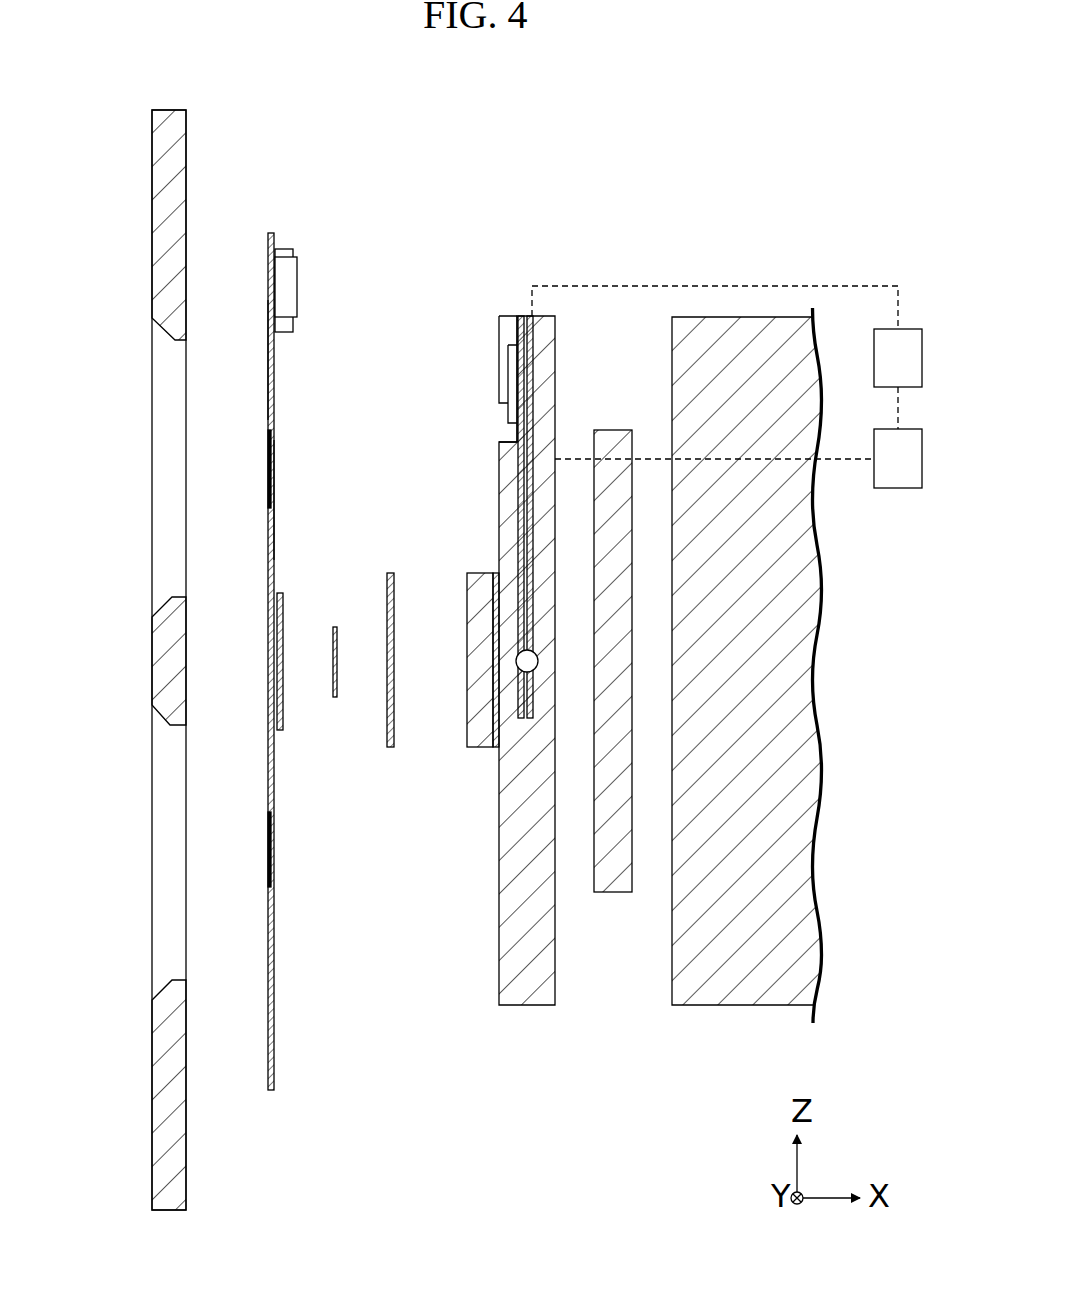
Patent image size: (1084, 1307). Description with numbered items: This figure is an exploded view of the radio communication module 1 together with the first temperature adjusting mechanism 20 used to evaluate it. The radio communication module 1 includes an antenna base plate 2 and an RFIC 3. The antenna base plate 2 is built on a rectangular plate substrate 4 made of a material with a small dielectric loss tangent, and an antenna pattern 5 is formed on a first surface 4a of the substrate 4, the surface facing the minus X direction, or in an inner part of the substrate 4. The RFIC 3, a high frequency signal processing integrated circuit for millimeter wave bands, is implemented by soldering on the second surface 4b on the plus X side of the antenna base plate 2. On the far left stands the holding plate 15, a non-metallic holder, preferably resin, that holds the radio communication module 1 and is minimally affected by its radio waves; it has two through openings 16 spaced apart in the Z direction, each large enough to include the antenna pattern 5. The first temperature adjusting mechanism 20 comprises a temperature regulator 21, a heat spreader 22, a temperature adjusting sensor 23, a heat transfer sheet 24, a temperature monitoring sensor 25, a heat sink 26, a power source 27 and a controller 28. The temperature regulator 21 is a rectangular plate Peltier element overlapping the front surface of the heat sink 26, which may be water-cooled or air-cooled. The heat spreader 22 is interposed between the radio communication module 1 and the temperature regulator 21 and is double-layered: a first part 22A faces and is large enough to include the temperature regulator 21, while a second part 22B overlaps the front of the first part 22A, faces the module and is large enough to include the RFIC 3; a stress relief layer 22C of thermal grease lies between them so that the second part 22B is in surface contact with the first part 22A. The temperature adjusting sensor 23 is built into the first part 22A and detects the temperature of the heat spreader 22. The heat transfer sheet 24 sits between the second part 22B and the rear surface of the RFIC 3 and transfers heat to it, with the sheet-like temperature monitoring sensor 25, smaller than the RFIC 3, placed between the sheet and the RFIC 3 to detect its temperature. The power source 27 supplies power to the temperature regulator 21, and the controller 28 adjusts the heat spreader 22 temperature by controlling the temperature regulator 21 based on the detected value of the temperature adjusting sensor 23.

The radio communication module 1 is at (277, 605).
The antenna base plate 2 is at (277, 661).
The RFIC 3 is at (281, 597).
The substrate 4 is at (277, 661).
The first surface 4a is at (268, 380).
The second surface 4b is at (277, 512).
The antenna pattern 5 is at (268, 462).
The holding plate 15 is at (124, 660).
The through openings 16 is at (182, 338).
The first temperature adjusting mechanism 20 is at (733, 371).
The temperature regulator 21 is at (608, 872).
The heat spreader 22 is at (429, 660).
The first part 22A is at (505, 803).
The second part 22B is at (473, 747).
The stress relief layer 22C is at (496, 748).
The temperature adjusting sensor 23 is at (530, 357).
The heat transfer sheet 24 is at (389, 750).
The temperature monitoring sensor 25 is at (334, 700).
The heat sink 26 is at (805, 682).
The power source 27 is at (897, 490).
The controller 28 is at (908, 329).